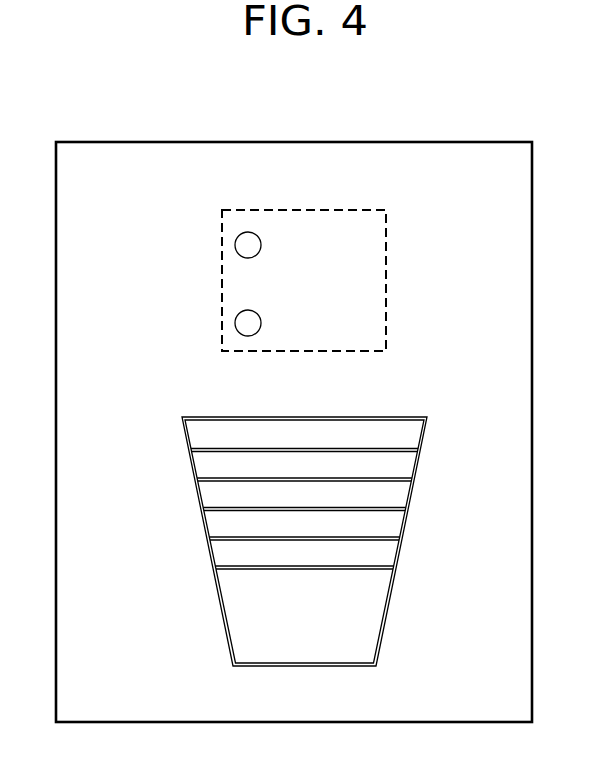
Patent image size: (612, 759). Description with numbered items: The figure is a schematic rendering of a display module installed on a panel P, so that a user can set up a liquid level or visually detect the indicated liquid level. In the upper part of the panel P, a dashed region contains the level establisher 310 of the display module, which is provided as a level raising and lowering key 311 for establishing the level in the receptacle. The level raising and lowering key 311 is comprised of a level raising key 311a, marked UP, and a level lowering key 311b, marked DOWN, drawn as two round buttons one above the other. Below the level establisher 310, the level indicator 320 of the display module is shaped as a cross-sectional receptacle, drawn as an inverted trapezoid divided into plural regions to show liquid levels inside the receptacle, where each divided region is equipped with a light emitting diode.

The panel P is at (462, 142).
The level establisher 310 is at (343, 210).
The level raising and lowering key 311 is at (143, 232).
The level raising key 311a is at (236, 245).
The level lowering key 311b is at (236, 325).
The level indicator 320 is at (186, 470).